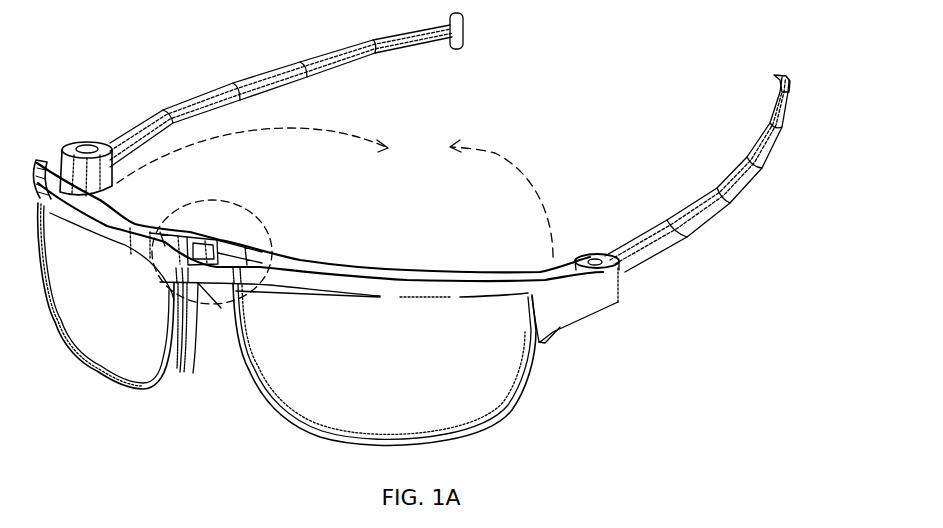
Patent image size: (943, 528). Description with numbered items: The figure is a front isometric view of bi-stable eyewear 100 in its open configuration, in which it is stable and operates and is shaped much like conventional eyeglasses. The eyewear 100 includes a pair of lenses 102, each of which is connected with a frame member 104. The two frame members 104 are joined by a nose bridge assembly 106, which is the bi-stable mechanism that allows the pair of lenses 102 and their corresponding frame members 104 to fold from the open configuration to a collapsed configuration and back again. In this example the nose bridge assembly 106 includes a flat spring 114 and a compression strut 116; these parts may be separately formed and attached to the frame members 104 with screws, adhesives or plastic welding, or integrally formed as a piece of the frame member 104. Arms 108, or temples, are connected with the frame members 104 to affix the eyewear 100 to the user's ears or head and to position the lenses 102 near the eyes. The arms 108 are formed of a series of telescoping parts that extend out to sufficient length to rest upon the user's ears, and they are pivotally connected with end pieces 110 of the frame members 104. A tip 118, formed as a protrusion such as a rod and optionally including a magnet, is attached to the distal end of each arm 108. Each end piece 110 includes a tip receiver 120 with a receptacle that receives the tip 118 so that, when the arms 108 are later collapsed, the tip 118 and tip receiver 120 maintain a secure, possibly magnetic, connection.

The eyewear 100 is at (140, 96).
The lenses 102 is at (120, 313).
The frame member 104 is at (110, 228).
The nose bridge assembly 106 is at (253, 213).
The arms 108 is at (697, 208).
The end pieces 110 is at (600, 303).
The flat spring 114 is at (213, 283).
The compression strut 116 is at (220, 245).
The tip 118 is at (458, 50).
The tip receiver 120 is at (595, 265).